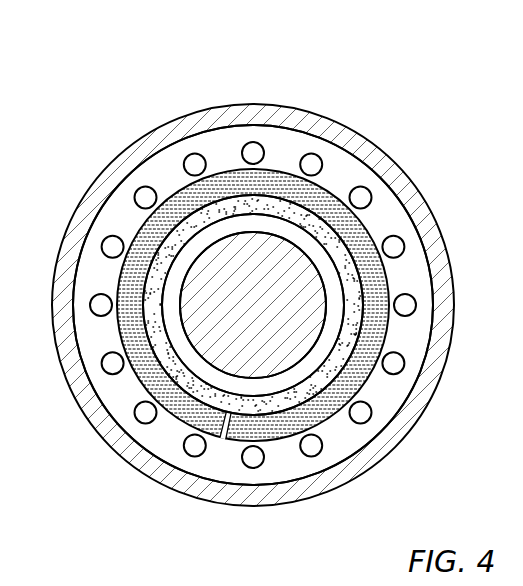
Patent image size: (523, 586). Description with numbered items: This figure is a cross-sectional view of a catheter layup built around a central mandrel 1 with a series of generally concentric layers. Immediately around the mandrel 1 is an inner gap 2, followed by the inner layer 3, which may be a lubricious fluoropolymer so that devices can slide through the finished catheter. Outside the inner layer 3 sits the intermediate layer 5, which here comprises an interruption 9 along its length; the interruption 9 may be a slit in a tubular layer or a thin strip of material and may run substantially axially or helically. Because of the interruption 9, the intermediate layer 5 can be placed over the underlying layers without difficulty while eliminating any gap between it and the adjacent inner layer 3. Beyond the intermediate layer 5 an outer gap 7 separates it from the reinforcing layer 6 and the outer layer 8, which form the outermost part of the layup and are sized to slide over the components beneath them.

The mandrel 1 is at (203, 287).
The inner gap 2 is at (210, 235).
The inner layer 3 is at (237, 202).
The intermediate layer 5 is at (289, 180).
The reinforcing layer 6 is at (362, 195).
The outer gap 7 is at (345, 168).
The outer layer 8 is at (433, 372).
The interruption 9 is at (222, 436).